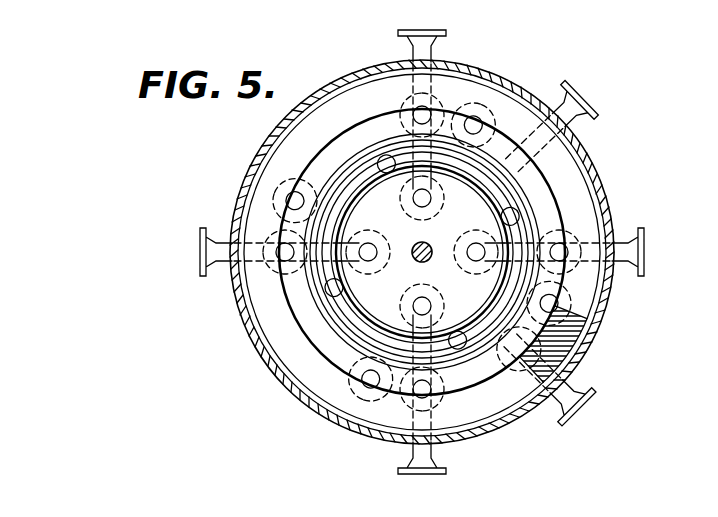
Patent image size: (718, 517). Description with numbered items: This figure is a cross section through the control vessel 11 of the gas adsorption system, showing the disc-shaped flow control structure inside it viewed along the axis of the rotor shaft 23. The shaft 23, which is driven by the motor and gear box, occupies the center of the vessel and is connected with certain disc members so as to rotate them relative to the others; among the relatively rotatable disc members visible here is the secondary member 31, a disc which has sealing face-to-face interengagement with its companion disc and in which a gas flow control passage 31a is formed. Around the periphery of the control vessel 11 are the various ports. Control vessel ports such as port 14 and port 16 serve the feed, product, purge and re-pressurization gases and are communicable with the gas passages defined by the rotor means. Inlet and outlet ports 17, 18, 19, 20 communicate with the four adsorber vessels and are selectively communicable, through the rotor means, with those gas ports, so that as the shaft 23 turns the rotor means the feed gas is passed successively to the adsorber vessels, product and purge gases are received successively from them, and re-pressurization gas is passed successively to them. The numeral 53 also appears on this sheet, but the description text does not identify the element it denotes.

The control vessel 11 is at (242, 164).
The control vessel port 14 is at (590, 404).
The control vessel port 16 is at (588, 82).
The inlet and outlet port 17 is at (400, 43).
The inlet and outlet port 18 is at (646, 262).
The inlet and outlet port 19 is at (399, 466).
The inlet and outlet port 20 is at (197, 246).
The rotor shaft 23 is at (414, 261).
The secondary relatively rotatable member 31 is at (597, 205).
The gas flow control passage 31a is at (357, 302).
The element 53 is at (697, 507).